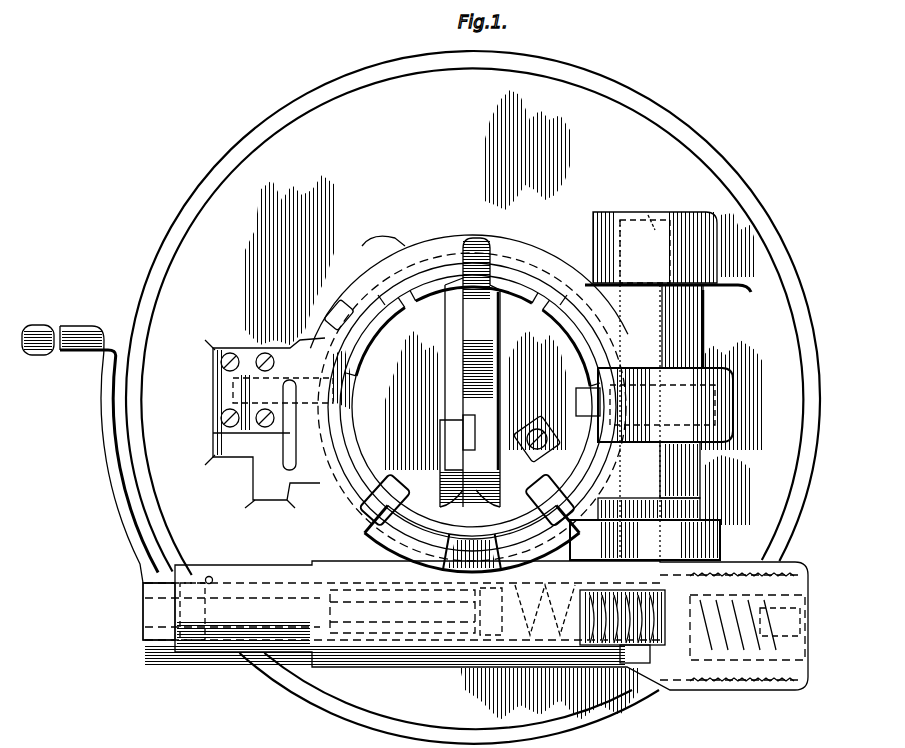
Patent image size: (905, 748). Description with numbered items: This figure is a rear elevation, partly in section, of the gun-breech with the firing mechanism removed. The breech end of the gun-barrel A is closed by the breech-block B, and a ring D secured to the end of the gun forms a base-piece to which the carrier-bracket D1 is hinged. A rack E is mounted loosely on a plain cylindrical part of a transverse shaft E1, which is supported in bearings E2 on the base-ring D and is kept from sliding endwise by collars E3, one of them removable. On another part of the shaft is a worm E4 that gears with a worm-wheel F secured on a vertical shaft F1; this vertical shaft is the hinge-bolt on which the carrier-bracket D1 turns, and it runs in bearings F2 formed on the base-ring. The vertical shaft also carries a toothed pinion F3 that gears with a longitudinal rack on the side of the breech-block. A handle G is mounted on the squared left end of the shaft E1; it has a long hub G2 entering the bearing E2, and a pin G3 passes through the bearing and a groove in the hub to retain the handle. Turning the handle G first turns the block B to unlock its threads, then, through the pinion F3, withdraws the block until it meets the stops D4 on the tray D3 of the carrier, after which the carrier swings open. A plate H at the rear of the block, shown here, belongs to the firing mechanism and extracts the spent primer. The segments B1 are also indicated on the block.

The breech end of the gun-barrel A is at (622, 98).
The breech-block B is at (472, 428).
The ring segments B1 is at (360, 352).
The ring D is at (505, 325).
The carrier-bracket D1 is at (466, 386).
The tray D3 is at (472, 538).
The stops D4 is at (467, 470).
The rack E is at (475, 625).
The shaft E1 is at (490, 611).
The bearings E2 is at (445, 643).
The collars E3 is at (491, 611).
The worm E4 is at (660, 624).
The worm-wheel F is at (651, 394).
The vertical shaft F1 is at (645, 216).
The bearings F2 is at (668, 335).
The toothed pinion F3 is at (588, 402).
The handle G is at (114, 470).
The long hub G2 is at (250, 485).
The pin G3 is at (219, 582).
The plate H is at (470, 372).